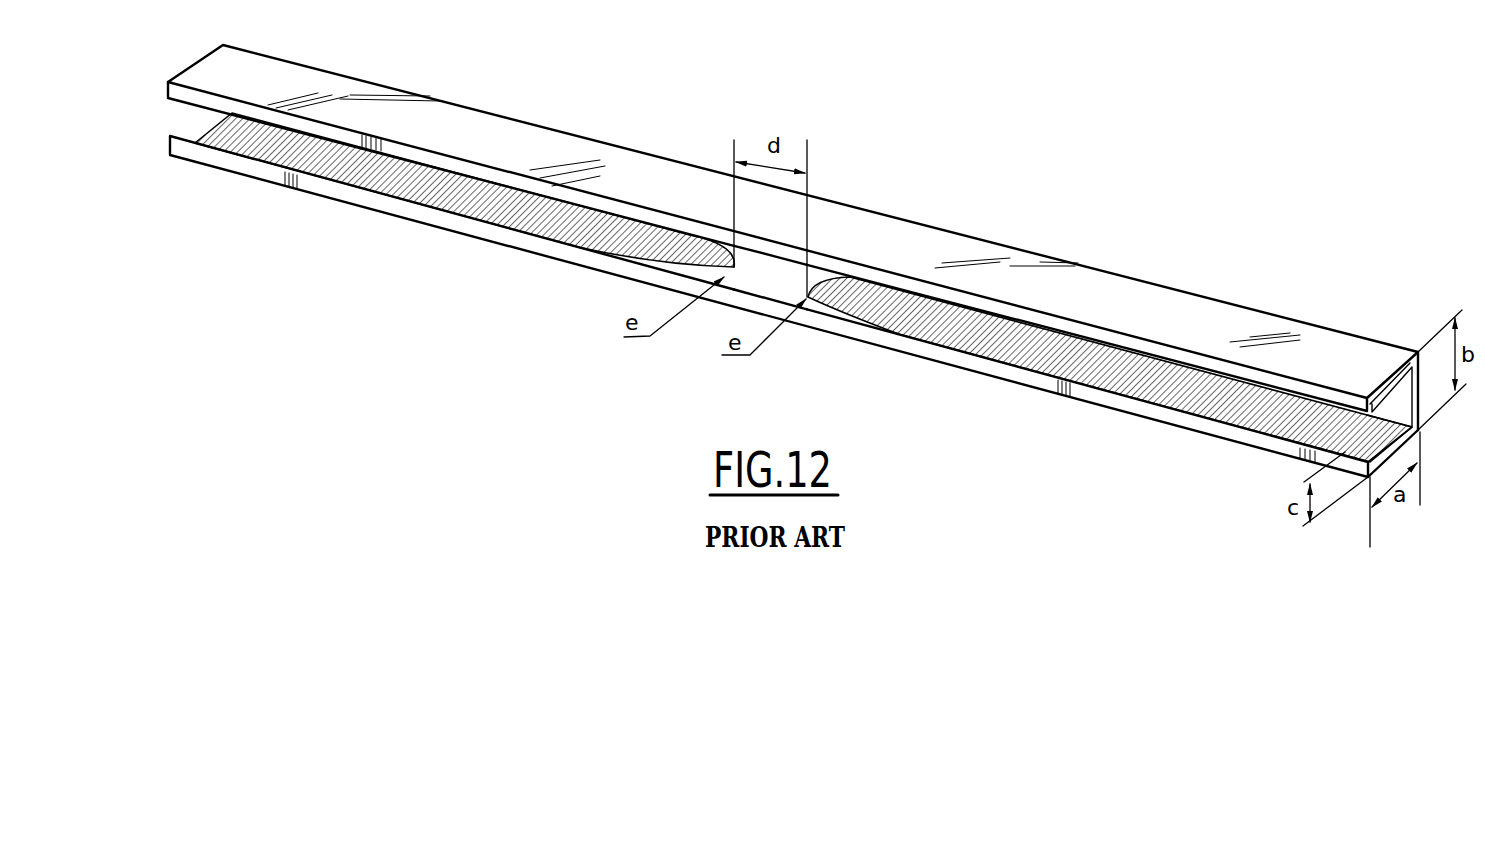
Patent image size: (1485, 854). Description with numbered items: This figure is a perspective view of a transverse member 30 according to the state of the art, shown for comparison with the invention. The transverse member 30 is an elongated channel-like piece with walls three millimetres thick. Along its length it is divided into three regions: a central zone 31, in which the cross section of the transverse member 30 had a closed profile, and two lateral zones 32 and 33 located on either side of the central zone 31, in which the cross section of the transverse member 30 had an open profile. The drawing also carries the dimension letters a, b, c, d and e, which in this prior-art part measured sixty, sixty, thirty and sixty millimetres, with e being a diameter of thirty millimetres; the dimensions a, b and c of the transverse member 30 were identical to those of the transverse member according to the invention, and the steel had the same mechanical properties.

The transverse member 30 is at (1083, 265).
The central zone 31 is at (747, 282).
The lateral zone 32 is at (1238, 395).
The lateral zone 33 is at (311, 170).